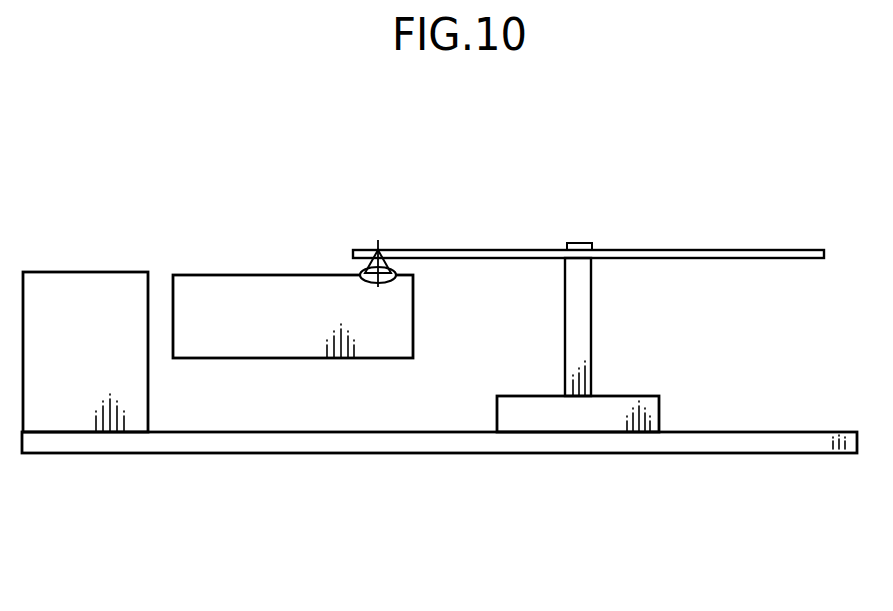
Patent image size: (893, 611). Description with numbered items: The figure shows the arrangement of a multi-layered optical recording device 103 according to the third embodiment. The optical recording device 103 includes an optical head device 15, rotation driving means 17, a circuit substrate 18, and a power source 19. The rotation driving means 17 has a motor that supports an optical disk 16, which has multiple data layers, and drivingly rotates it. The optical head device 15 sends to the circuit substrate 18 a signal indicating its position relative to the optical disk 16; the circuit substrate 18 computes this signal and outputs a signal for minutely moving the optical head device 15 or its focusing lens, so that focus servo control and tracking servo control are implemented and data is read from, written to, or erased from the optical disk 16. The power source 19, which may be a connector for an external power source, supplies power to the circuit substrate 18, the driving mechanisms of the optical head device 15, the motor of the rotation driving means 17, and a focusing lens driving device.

The optical head device 15 is at (254, 286).
The optical disk 16 is at (670, 252).
The rotation driving means 17 is at (541, 418).
The circuit substrate 18 is at (352, 447).
The power source 19 is at (84, 282).
The optical recording device 103 is at (838, 541).